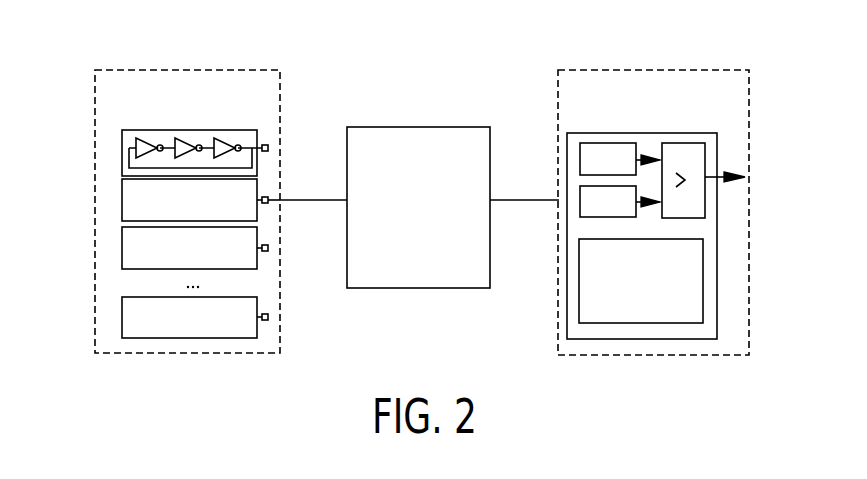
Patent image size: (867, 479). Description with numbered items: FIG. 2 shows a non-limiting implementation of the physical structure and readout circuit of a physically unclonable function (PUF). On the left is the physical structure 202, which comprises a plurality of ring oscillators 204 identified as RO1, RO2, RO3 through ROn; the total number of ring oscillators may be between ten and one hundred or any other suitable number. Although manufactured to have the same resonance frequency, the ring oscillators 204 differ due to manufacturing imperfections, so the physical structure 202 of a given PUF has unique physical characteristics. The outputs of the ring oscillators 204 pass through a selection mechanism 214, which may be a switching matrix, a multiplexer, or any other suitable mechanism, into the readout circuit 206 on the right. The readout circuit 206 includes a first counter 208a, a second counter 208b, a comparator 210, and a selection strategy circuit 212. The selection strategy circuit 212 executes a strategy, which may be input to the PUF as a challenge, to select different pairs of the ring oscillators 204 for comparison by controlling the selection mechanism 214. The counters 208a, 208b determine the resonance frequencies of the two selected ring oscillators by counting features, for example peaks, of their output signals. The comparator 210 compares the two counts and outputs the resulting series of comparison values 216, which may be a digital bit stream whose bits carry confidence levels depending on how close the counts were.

The physical structure 202 is at (158, 70).
The ring oscillators 204 is at (122, 152).
The selection mechanism 214 is at (415, 127).
The readout circuit 206 is at (650, 70).
The first counter 208a is at (612, 143).
The second counter 208b is at (578, 210).
The comparator 210 is at (705, 210).
The selection strategy circuit 212 is at (703, 272).
The series of comparison values 216 is at (718, 177).